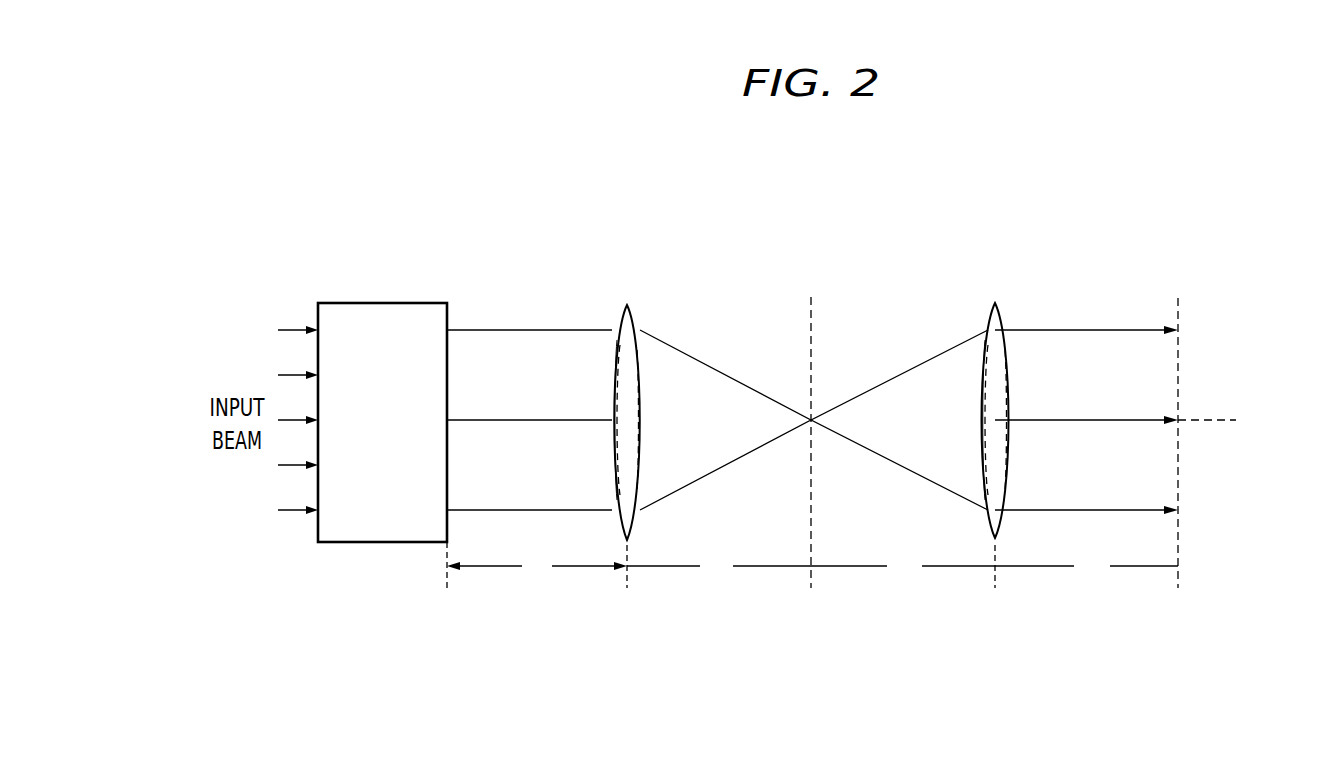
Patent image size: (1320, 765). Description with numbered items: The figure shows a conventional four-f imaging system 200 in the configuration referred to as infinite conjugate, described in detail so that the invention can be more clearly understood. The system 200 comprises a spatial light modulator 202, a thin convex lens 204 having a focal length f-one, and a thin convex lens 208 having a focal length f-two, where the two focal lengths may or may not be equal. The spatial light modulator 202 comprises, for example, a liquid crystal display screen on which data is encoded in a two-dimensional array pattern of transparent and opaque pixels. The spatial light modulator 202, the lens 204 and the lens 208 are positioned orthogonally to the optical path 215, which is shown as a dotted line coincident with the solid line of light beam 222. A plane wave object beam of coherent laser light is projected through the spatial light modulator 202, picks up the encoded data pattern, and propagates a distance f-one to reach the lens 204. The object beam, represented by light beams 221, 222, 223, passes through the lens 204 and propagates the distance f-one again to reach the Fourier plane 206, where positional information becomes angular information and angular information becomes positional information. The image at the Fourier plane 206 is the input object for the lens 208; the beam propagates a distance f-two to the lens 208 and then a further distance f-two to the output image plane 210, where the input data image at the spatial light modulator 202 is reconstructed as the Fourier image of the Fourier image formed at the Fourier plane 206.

The 4-f imaging system 200 is at (910, 206).
The spatial light modulator 202 is at (380, 303).
The thin convex lens 204 is at (628, 305).
The Fourier plane 206 is at (812, 297).
The thin convex lens 208 is at (996, 303).
The output image plane 210 is at (1180, 298).
The optical path 215 is at (1213, 420).
The light beam 221 is at (510, 330).
The light beam 222 is at (505, 420).
The light beam 223 is at (500, 510).